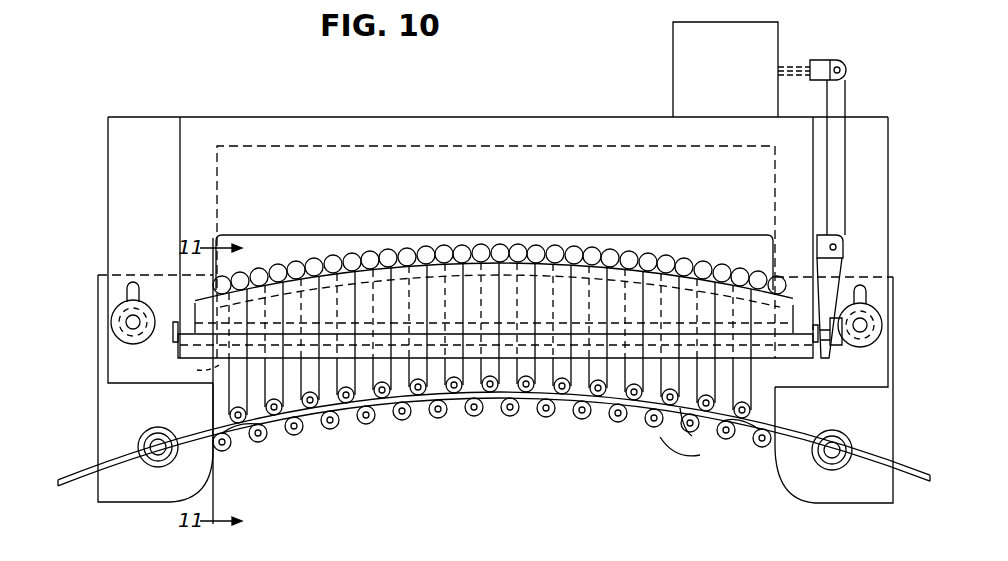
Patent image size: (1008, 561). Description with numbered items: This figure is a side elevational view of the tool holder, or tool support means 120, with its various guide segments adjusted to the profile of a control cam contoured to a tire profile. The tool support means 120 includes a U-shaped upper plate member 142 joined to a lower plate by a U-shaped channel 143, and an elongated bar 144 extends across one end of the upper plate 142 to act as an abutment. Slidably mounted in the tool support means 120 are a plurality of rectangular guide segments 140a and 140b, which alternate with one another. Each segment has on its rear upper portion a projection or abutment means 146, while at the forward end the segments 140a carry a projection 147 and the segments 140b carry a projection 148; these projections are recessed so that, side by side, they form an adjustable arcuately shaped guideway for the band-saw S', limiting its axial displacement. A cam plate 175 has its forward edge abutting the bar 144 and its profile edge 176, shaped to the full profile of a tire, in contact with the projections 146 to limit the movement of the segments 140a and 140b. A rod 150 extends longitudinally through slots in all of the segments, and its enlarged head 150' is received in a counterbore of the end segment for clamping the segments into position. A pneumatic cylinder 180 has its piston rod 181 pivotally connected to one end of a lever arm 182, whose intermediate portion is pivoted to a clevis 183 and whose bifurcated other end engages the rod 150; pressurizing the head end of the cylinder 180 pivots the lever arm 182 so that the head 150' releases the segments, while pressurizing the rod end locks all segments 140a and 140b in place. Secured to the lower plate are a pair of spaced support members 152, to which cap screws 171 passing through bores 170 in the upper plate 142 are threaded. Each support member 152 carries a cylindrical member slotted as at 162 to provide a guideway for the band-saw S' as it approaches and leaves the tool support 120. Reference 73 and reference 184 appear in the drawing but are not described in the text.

The tool support means 120 is at (441, 95).
The U-shaped channel 143 is at (150, 164).
The U-shaped upper plate member 142 is at (515, 177).
The cover plate 73 is at (758, 256).
The cam plate 175 is at (447, 285).
The profile edge 176 is at (547, 262).
The projection or abutment means 146 is at (655, 268).
The elongated bar 144 is at (178, 347).
The rod 150 is at (505, 366).
The enlarged head 150' is at (187, 373).
The guide segments 140b is at (245, 432).
The projection 148 is at (345, 415).
The guide segments 140a is at (228, 446).
The projection 147 is at (698, 452).
The support member 152 is at (105, 402).
The slot 162 is at (150, 444).
The band-saw S' is at (501, 439).
The bores 170 is at (127, 292).
The cap screw 171 is at (108, 321).
The stop block 184 is at (837, 348).
The clevis 183 is at (828, 241).
The lever arm 182 is at (848, 100).
The piston rod 181 is at (795, 62).
The pneumatic cylinder 180 is at (745, 58).